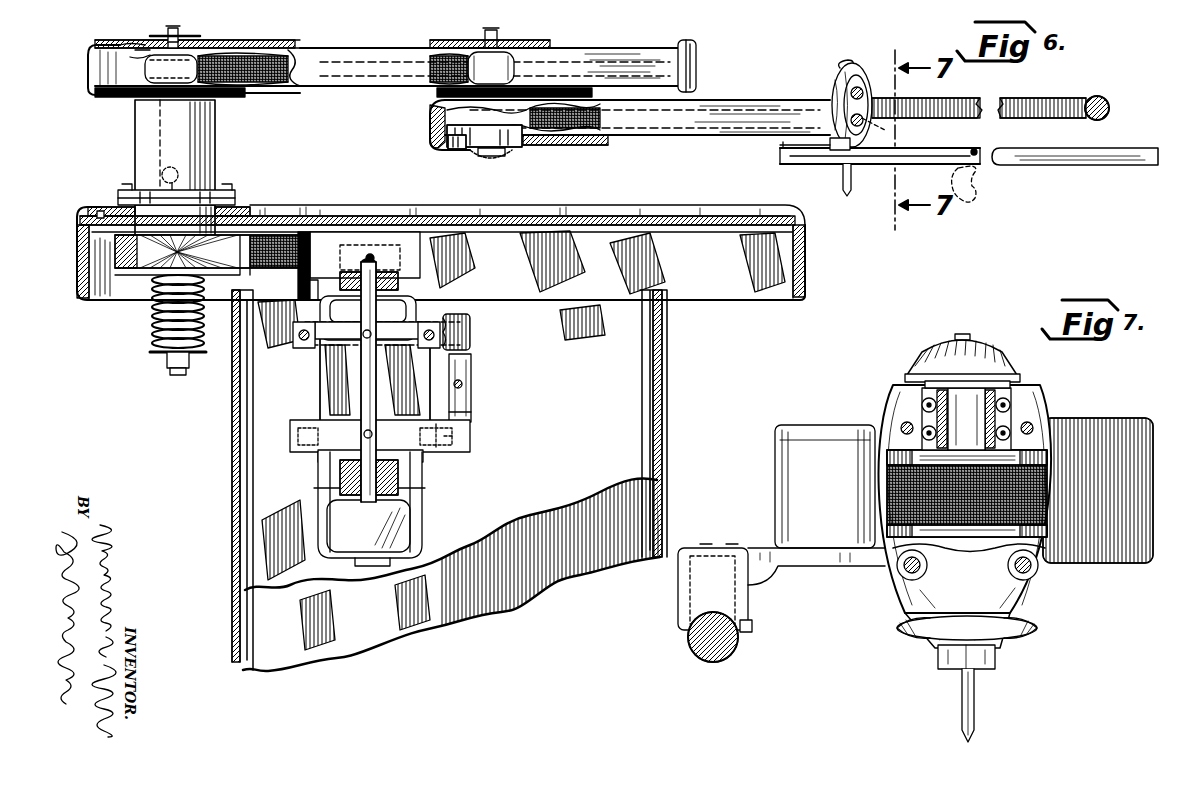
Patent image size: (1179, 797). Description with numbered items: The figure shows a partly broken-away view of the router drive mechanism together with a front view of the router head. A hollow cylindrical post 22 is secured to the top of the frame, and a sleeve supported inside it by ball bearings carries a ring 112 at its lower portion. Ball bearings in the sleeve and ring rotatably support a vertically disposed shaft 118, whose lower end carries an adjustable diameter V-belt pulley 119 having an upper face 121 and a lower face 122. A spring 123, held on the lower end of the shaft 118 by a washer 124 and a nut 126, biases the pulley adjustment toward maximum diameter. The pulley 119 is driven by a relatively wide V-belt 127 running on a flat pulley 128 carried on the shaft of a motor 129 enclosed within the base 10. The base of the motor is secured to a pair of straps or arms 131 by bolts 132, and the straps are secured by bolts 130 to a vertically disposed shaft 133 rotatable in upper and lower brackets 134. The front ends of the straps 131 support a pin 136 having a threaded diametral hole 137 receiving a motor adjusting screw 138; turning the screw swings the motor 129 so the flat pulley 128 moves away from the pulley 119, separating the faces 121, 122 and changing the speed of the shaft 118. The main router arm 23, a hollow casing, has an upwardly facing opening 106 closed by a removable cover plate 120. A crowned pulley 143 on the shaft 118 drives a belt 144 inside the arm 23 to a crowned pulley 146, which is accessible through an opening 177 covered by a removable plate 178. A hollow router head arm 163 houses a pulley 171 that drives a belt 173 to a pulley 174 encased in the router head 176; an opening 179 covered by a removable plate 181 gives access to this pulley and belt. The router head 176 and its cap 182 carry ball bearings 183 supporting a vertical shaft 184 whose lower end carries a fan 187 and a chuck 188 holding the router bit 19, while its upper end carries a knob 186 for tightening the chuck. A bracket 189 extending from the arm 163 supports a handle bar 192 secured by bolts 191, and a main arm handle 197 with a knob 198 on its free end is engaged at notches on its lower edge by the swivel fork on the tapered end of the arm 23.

In FIG. 6, the base 10 is at (662, 388).
In FIG. 6, the router bit 19 is at (852, 180).
In FIG. 7, the router bit 19 is at (976, 704).
In FIG. 6, the hollow cylindrical post 22 is at (205, 150).
In FIG. 6, the main router arm 23 is at (360, 37).
In FIG. 6, the upwardly facing opening 106 is at (100, 57).
In FIG. 6, the ring 112 is at (226, 194).
In FIG. 6, the vertically disposed shaft 118 is at (176, 30).
In FIG. 6, the adjustable diameter V-belt pulley 119 is at (110, 256).
In FIG. 6, the removable cover plate 120 is at (150, 44).
In FIG. 6, the upper face 121 is at (245, 220).
In FIG. 6, the lower face 122 is at (150, 266).
In FIG. 6, the spring 123 is at (155, 322).
In FIG. 6, the washer 124 is at (186, 360).
In FIG. 6, the nut 126 is at (178, 376).
In FIG. 6, the V-belt 127 is at (300, 292).
In FIG. 6, the flat pulley 128 is at (366, 232).
In FIG. 6, the motor 129 is at (320, 370).
In FIG. 6, the bolts 130 is at (364, 434).
In FIG. 6, the straps or arms 131 is at (472, 330).
In FIG. 6, the bolts 132 is at (470, 432).
In FIG. 6, the vertically disposed shaft 133 is at (360, 500).
In FIG. 6, the brackets 134 is at (400, 280).
In FIG. 6, the pin 136 is at (470, 367).
In FIG. 6, the threaded diametral hole 137 is at (463, 384).
In FIG. 6, the motor adjusting screw 138 is at (470, 396).
In FIG. 6, the crowned pulley 143 is at (205, 58).
In FIG. 6, the belt 144 is at (275, 55).
In FIG. 6, the crowned pulley 146 is at (500, 56).
In FIG. 6, the hollow router head arm 163 is at (760, 99).
In FIG. 7, the hollow router head arm 163 is at (782, 460).
In FIG. 6, the pulley 171 is at (432, 124).
In FIG. 6, the belt 173 is at (570, 140).
In FIG. 7, the belt 173 is at (1068, 572).
In FIG. 6, the pulley 174 is at (884, 128).
In FIG. 7, the pulley 174 is at (956, 550).
In FIG. 6, the router head 176 is at (832, 96).
In FIG. 7, the router head 176 is at (1040, 407).
In FIG. 6, the opening 177 is at (490, 30).
In FIG. 6, the removable plate 178 is at (455, 42).
In FIG. 6, the opening 179 is at (470, 148).
In FIG. 6, the removable plate 181 is at (498, 156).
In FIG. 6, the cap 182 is at (862, 80).
In FIG. 7, the cap 182 is at (905, 600).
In FIG. 7, the ball bearings 183 is at (922, 400).
In FIG. 7, the vertical shaft 184 is at (1010, 380).
In FIG. 7, the knob 186 is at (925, 370).
In FIG. 7, the fan 187 is at (912, 637).
In FIG. 7, the chuck 188 is at (985, 657).
In FIG. 6, the bracket 189 is at (822, 150).
In FIG. 7, the bracket 189 is at (748, 628).
In FIG. 6, the bolts 191 is at (808, 166).
In FIG. 7, the bolts 191 is at (700, 548).
In FIG. 6, the handle bar 192 is at (1110, 166).
In FIG. 7, the handle bar 192 is at (696, 658).
In FIG. 6, the main arm handle 197 is at (1038, 99).
In FIG. 6, the knob 198 is at (1109, 110).